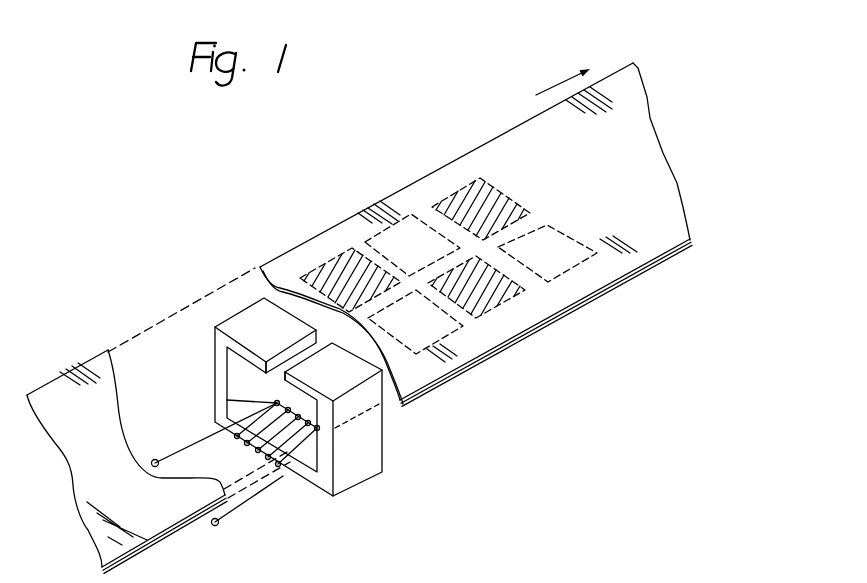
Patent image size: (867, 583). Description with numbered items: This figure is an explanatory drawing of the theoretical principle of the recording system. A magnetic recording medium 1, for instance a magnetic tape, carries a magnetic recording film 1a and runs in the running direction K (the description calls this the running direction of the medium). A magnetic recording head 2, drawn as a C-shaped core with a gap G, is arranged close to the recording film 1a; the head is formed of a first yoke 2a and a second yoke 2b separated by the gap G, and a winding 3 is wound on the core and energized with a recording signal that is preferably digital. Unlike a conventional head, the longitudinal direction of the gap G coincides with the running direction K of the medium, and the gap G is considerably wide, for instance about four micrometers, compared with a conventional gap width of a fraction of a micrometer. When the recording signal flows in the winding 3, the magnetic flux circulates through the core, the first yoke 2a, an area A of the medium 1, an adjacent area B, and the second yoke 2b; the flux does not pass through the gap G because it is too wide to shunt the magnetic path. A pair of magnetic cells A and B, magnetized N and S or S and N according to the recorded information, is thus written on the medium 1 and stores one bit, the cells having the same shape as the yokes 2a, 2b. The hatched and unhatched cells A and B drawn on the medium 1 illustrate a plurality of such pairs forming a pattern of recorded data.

The magnetic recording medium 1 is at (117, 582).
The magnetic recording film 1a is at (645, 264).
The magnetic head core 2 is at (321, 373).
The first core half 2a is at (297, 348).
The second core half 2b is at (348, 373).
The coil 3 is at (273, 490).
The magnetic cell A is at (327, 260).
The magnetic cell B is at (453, 347).
The gap G is at (259, 316).
The tape running direction K is at (552, 81).